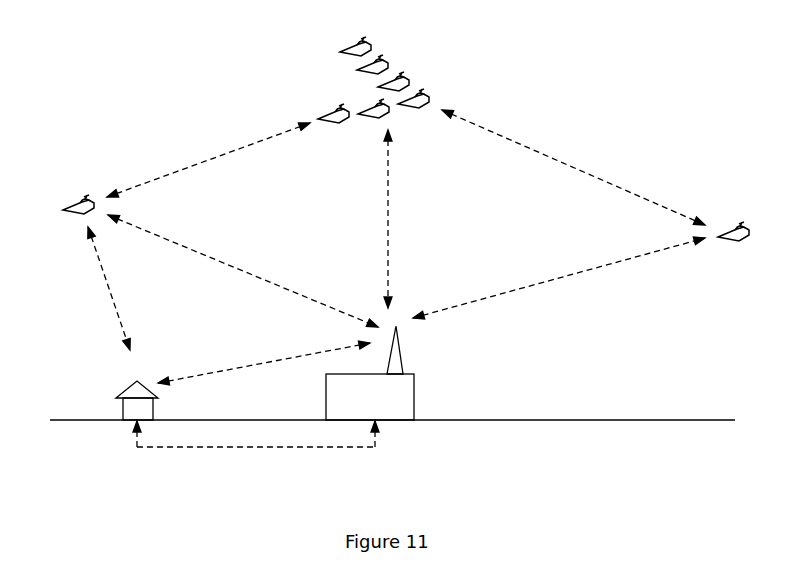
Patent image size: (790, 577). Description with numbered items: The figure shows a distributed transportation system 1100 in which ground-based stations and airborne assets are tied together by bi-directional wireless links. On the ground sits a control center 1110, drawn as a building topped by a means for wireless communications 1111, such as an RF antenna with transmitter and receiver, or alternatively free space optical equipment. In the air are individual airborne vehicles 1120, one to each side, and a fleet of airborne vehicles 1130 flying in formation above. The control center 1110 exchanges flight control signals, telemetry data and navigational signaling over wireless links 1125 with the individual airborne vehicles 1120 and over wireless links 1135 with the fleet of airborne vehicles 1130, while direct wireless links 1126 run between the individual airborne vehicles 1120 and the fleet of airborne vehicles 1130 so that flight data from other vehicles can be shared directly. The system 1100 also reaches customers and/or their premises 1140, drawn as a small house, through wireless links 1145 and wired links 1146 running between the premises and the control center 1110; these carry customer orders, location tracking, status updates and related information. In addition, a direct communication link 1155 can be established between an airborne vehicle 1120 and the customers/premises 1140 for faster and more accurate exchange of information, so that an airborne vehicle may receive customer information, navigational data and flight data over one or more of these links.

The distributed transportation system 1100 is at (416, 506).
The control center 1110 is at (370, 397).
The means for wireless communications 1111 is at (423, 350).
The individual airborne vehicles 1120 is at (392, 211).
The wireless links 1125 is at (406, 271).
The direct wireless links 1126 is at (406, 167).
The fleet of airborne vehicles 1130 is at (378, 79).
The wireless links 1135 is at (416, 219).
The customers and/or their premises 1140 is at (125, 391).
The wireless links 1145 is at (264, 360).
The wired links 1146 is at (256, 449).
The direct communication link 1155 is at (92, 288).